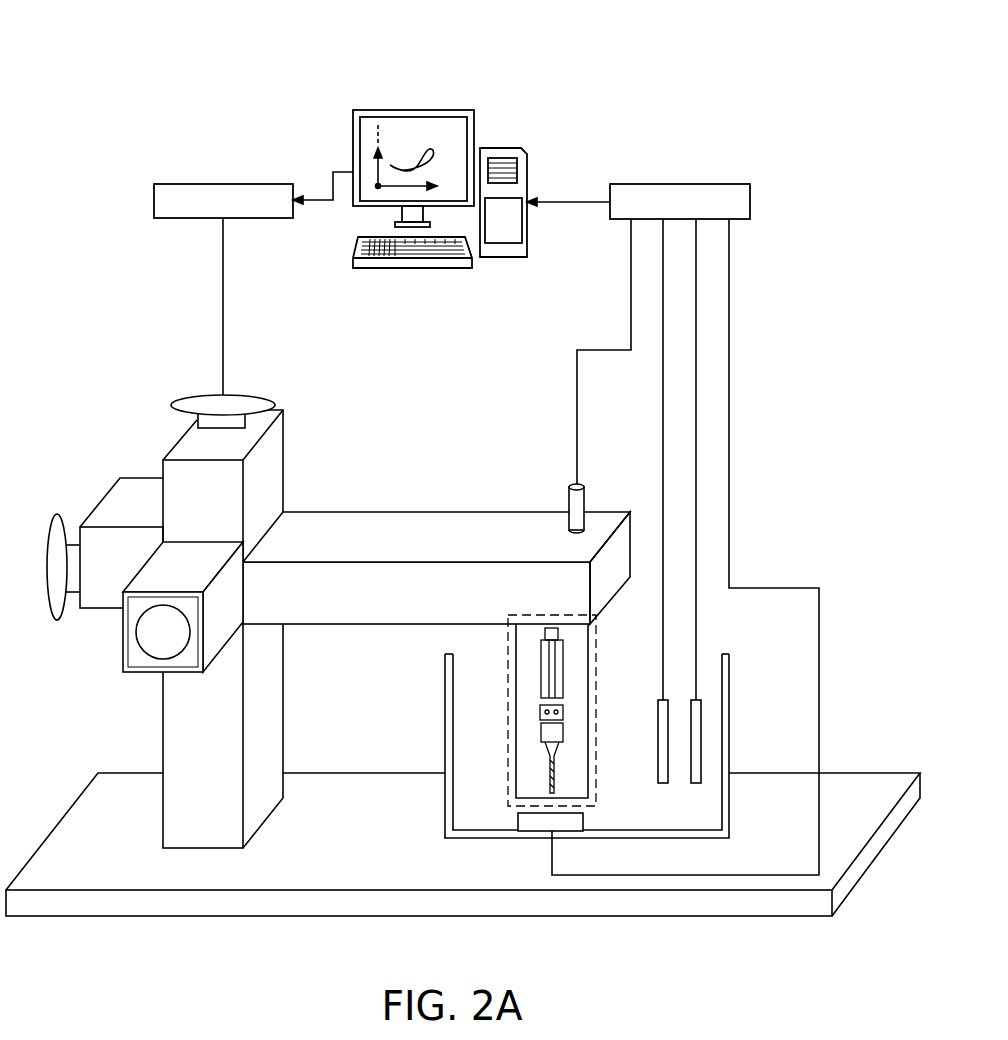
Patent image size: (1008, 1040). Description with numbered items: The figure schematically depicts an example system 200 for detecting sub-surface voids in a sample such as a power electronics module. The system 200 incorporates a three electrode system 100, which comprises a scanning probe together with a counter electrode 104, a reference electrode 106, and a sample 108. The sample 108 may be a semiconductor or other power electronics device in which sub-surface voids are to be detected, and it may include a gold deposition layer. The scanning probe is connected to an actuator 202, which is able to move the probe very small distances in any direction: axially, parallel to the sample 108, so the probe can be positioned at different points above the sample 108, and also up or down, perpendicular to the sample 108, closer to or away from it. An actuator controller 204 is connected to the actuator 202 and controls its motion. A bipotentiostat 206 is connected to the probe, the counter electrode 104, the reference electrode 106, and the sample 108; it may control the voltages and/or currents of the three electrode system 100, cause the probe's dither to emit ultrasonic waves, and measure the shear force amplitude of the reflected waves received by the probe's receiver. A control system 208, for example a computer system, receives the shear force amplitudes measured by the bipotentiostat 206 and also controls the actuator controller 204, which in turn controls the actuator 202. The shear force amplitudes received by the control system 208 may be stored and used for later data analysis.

The three electrode system 100 is at (598, 792).
The counter electrode 104 is at (663, 783).
The reference electrode 106 is at (703, 743).
The sample 108 is at (535, 831).
The system 200 is at (430, 444).
The actuator 202 is at (128, 488).
The actuator controller 204 is at (249, 215).
The bipotentiostat 206 is at (706, 215).
The control system 208 is at (457, 149).